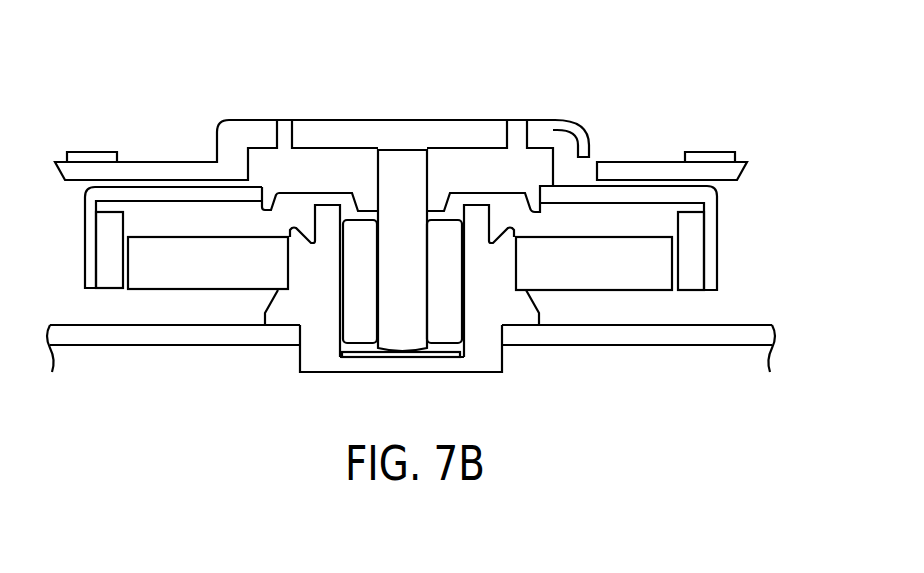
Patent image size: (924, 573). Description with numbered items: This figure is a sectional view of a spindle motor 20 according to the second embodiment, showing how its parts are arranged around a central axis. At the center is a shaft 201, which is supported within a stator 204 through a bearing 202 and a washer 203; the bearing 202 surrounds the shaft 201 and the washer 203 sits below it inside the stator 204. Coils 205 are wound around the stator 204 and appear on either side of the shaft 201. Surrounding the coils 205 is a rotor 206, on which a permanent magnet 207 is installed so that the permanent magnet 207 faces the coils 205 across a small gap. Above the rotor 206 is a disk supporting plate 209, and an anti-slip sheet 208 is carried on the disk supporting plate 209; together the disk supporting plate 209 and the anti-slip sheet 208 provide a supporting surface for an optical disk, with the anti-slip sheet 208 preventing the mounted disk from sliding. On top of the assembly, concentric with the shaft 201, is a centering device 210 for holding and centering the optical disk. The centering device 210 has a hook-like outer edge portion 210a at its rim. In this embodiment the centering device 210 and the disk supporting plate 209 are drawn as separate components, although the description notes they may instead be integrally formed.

The spindle motor 20 is at (667, 62).
The shaft 201 is at (402, 149).
The bearing 202 is at (445, 344).
The washer 203 is at (390, 358).
The stator 204 is at (508, 313).
The coils 205 is at (613, 270).
The rotor 206 is at (718, 222).
The permanent magnet 207 is at (691, 259).
The anti-slip sheet 208 is at (712, 152).
The disk supporting plate 209 is at (736, 172).
The centering device 210 is at (520, 119).
The hook portion 210a is at (572, 121).